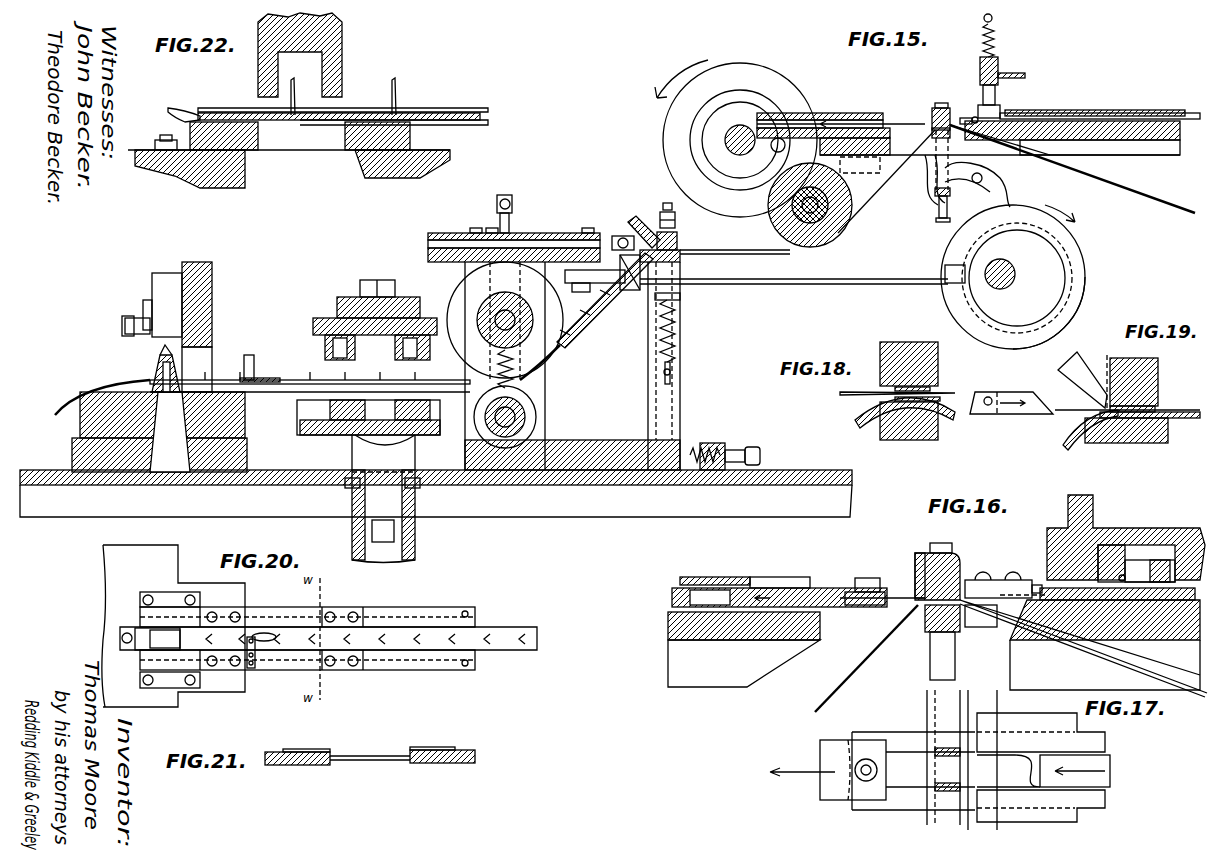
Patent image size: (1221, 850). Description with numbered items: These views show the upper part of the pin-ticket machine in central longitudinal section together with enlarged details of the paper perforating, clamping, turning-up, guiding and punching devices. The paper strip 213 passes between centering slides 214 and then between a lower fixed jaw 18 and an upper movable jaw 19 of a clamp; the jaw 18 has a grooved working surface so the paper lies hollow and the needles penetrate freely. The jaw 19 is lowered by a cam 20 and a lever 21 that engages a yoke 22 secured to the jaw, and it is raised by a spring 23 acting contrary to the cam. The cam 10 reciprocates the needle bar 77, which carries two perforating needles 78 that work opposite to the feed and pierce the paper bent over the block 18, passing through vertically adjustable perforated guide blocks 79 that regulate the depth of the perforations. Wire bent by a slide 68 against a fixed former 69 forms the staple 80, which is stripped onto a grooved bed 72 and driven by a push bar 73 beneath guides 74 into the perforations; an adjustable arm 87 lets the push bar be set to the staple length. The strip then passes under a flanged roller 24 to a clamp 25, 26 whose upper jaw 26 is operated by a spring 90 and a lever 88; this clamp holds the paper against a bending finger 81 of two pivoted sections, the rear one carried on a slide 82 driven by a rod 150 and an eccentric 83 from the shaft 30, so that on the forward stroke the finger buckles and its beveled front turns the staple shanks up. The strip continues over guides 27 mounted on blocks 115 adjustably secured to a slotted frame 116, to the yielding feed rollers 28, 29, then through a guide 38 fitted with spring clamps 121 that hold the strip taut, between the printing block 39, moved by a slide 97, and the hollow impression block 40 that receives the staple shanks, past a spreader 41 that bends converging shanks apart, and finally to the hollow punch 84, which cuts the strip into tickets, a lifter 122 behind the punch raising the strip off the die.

In FIG. 15, the cam 10 is at (736, 138).
In FIG. 15, the lower fixed jaw 18 is at (950, 128).
In FIG. 18, the lower fixed jaw 18 is at (915, 440).
In FIG. 16, the lower fixed jaw 18 is at (958, 625).
In FIG. 17, the lower fixed jaw 18 is at (935, 715).
In FIG. 15, the upper movable jaw 19 is at (935, 107).
In FIG. 18, the upper movable jaw 19 is at (938, 362).
In FIG. 16, the upper movable jaw 19 is at (960, 568).
In FIG. 15, the cam 20 is at (955, 250).
In FIG. 15, the lever 21 is at (1000, 185).
In FIG. 15, the yoke 22 is at (935, 195).
In FIG. 15, the spring 23 is at (930, 185).
In FIG. 15, the flanged roller 24 is at (845, 232).
In FIG. 15, the clamp lower jaw 25 is at (680, 258).
In FIG. 19, the clamp lower jaw 25 is at (1160, 452).
In FIG. 15, the upper movable jaw 26 is at (677, 238).
In FIG. 19, the upper movable jaw 26 is at (1135, 358).
In FIG. 15, the guides 27 is at (578, 328).
In FIG. 15, the feed roller 28 is at (535, 322).
In FIG. 15, the feed roller 29 is at (537, 413).
In FIG. 15, the shaft 30 is at (1015, 272).
In FIG. 15, the guide 38 is at (282, 386).
In FIG. 20, the guide 38 is at (445, 612).
In FIG. 21, the guide 38 is at (475, 757).
In FIG. 15, the printing block 39 is at (300, 430).
In FIG. 15, the impression block 40 is at (325, 322).
In FIG. 15, the spreader 41 is at (252, 370).
In FIG. 20, the spreader 41 is at (255, 665).
In FIG. 15, the slide 68 is at (1110, 113).
In FIG. 16, the slide 68 is at (1135, 550).
In FIG. 16, the former 69 is at (1050, 532).
In FIG. 16, the grooved bed 72 is at (1195, 600).
In FIG. 17, the grooved bed 72 is at (1041, 767).
In FIG. 15, the push bar 73 is at (1045, 120).
In FIG. 16, the push bar 73 is at (1060, 600).
In FIG. 17, the push bar 73 is at (1108, 760).
In FIG. 15, the guides 74 is at (965, 116).
In FIG. 16, the guides 74 is at (1013, 578).
In FIG. 15, the needle bar 77 is at (815, 118).
In FIG. 16, the needle bar 77 is at (820, 590).
In FIG. 17, the needle bar 77 is at (828, 770).
In FIG. 15, the perforating needles 78 is at (905, 126).
In FIG. 18, the perforating needles 78 is at (897, 387).
In FIG. 16, the perforating needles 78 is at (893, 592).
In FIG. 17, the perforating needles 78 is at (930, 762).
In FIG. 16, the guide blocks 79 is at (918, 556).
In FIG. 16, the staple 80 is at (1040, 580).
In FIG. 17, the staple 80 is at (1008, 771).
In FIG. 15, the bending finger 81 is at (648, 232).
In FIG. 19, the bending finger 81 is at (1038, 383).
In FIG. 15, the slide 82 is at (620, 236).
In FIG. 15, the eccentric 83 is at (1085, 282).
In FIG. 22, the punch 84 is at (318, 70).
In FIG. 15, the punch 84 is at (158, 362).
In FIG. 15, the adjustable arm 87 is at (1080, 121).
In FIG. 15, the lever 88 is at (665, 212).
In FIG. 15, the spring 90 is at (680, 320).
In FIG. 15, the slide 97 is at (352, 520).
In FIG. 15, the blocks 115 is at (630, 290).
In FIG. 15, the slotted frame 116 is at (428, 244).
In FIG. 20, the spring clamps 121 is at (345, 612).
In FIG. 21, the spring clamps 121 is at (310, 749).
In FIG. 22, the lifter 122 is at (185, 121).
In FIG. 15, the lifter 122 is at (135, 381).
In FIG. 20, the lifter 122 is at (140, 633).
In FIG. 15, the rod 150 is at (794, 273).
In FIG. 22, the paper strip 213 is at (440, 112).
In FIG. 18, the paper strip 213 is at (890, 416).
In FIG. 19, the paper strip 213 is at (1128, 422).
In FIG. 16, the paper strip 213 is at (1011, 656).
In FIG. 17, the paper strip 213 is at (946, 782).
In FIG. 20, the paper strip 213 is at (328, 626).
In FIG. 16, the centering slides 214 is at (985, 627).
In FIG. 17, the centering slides 214 is at (990, 700).